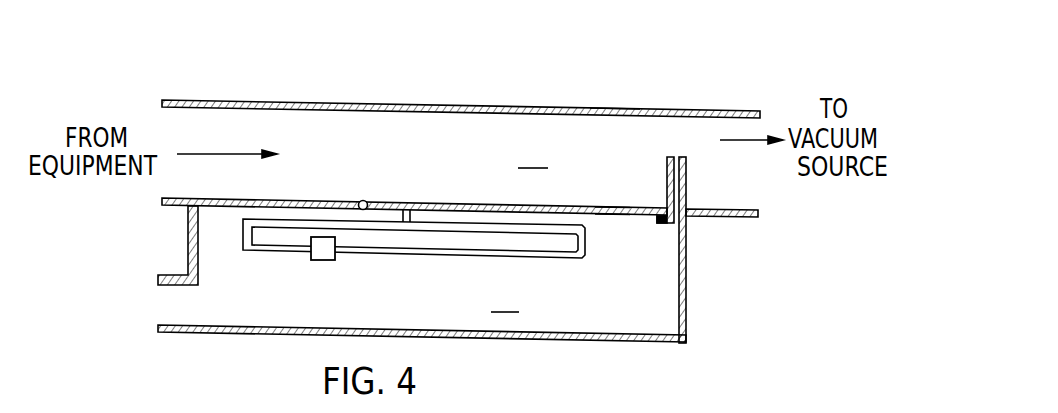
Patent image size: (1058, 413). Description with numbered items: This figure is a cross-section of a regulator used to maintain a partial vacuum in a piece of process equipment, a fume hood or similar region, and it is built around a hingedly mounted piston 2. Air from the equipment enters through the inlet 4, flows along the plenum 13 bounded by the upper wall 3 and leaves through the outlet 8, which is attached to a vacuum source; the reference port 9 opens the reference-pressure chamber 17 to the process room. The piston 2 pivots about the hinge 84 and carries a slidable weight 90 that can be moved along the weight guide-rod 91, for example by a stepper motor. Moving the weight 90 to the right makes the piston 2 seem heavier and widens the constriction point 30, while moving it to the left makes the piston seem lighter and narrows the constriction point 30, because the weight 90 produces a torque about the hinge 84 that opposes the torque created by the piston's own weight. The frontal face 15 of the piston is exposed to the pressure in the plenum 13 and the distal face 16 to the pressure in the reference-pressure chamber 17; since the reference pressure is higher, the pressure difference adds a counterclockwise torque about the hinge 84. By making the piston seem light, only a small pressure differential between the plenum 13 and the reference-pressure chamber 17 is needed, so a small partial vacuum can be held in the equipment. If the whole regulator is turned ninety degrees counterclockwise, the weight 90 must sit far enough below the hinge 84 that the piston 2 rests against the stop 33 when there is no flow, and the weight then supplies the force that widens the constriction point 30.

The inlet 4 is at (205, 100).
The upper wall 3 is at (612, 108).
The constriction point 30 is at (673, 135).
The piston 2 is at (450, 205).
The plenum 13 is at (533, 153).
The frontal face 15 is at (612, 207).
The distal face 16 is at (608, 215).
The hinge 84 is at (363, 200).
The weight guide-rod 91 is at (383, 255).
The slidable weight 90 is at (317, 262).
The reference-pressure chamber 17 is at (505, 299).
The stop 33 is at (662, 223).
The outlet 8 is at (735, 217).
The reference port 9 is at (175, 332).